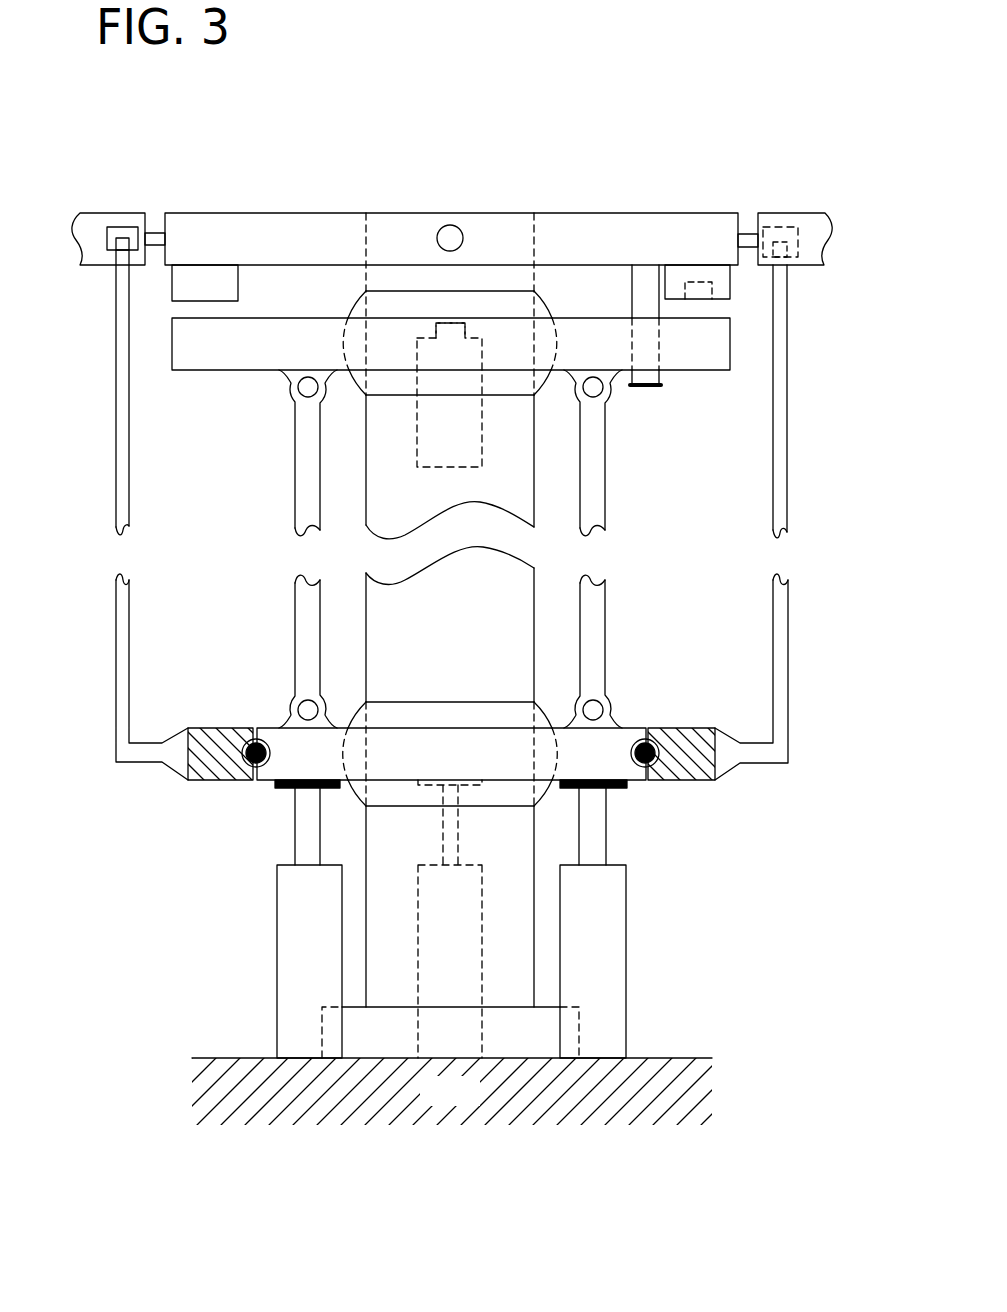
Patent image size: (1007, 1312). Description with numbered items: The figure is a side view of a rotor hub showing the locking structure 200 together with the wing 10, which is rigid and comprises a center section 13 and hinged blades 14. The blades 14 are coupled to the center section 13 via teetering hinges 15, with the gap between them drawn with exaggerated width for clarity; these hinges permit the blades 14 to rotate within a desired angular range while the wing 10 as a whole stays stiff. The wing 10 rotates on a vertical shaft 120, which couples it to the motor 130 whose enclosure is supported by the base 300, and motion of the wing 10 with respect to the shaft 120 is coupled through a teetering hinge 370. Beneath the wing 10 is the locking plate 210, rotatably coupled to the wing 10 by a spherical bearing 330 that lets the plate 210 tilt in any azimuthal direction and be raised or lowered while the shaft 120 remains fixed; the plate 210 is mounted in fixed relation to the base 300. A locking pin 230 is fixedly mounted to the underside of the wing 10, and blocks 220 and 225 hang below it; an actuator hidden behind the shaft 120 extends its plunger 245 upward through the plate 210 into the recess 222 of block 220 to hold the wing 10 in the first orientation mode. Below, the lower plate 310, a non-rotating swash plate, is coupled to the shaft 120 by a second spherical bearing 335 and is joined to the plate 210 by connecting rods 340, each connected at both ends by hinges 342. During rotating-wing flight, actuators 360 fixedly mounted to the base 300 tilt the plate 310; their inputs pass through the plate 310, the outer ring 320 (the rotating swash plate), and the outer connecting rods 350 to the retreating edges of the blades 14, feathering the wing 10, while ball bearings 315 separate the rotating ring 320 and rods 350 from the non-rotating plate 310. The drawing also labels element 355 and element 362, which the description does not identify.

The structure 200 is at (637, 118).
The wing 10 is at (228, 205).
The center section 13 is at (308, 213).
The blades 14 is at (80, 216).
The teetering hinges 15 is at (160, 233).
The alignment block 355 is at (127, 227).
The teetering hinge 370 is at (450, 225).
The recess 222 is at (702, 283).
The block 225 is at (240, 278).
The block 220 is at (736, 280).
The spherical bearing 330 is at (547, 301).
The plunger 245 is at (450, 323).
The outer connecting rods 350 is at (116, 352).
The locking plate 210 is at (212, 370).
The locking pin 230 is at (417, 419).
The connecting rods 340 is at (294, 487).
The shaft 120 is at (450, 610).
The spherical bearing 335 is at (418, 702).
The hinges 342 is at (275, 716).
The ball bearings 315 is at (645, 726).
The outer ring 320 is at (196, 782).
The lower plate 310 is at (266, 782).
The piston rod 362 is at (294, 845).
The actuators 360 is at (277, 935).
The motor 130 is at (586, 1031).
The base 300 is at (446, 1091).